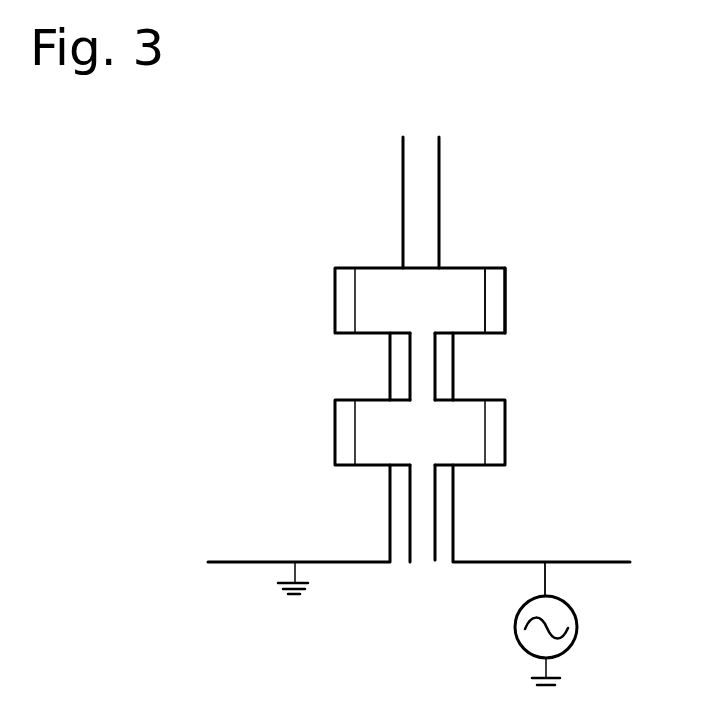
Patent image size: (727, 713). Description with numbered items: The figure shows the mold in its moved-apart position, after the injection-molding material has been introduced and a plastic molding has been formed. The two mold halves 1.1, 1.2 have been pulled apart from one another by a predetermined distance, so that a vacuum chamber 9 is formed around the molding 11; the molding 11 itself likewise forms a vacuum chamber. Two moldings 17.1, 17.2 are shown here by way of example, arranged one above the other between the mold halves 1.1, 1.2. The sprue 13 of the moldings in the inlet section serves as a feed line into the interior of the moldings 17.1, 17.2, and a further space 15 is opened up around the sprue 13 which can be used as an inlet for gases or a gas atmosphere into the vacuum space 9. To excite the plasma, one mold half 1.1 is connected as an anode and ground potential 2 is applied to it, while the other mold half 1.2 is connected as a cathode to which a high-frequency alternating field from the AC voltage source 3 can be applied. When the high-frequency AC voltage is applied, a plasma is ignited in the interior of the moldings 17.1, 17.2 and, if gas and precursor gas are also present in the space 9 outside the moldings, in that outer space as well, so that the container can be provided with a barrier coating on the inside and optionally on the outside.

The mold half 1.1 is at (397, 187).
The mold half 1.2 is at (443, 207).
The molding 11 is at (457, 285).
The vacuum chamber 9 is at (497, 280).
The molding 17.1 is at (477, 315).
The sprue 13 is at (422, 373).
The molding 17.2 is at (467, 441).
The further space 15 is at (447, 528).
The ground potential 2 is at (302, 575).
The AC voltage source 3 is at (572, 603).